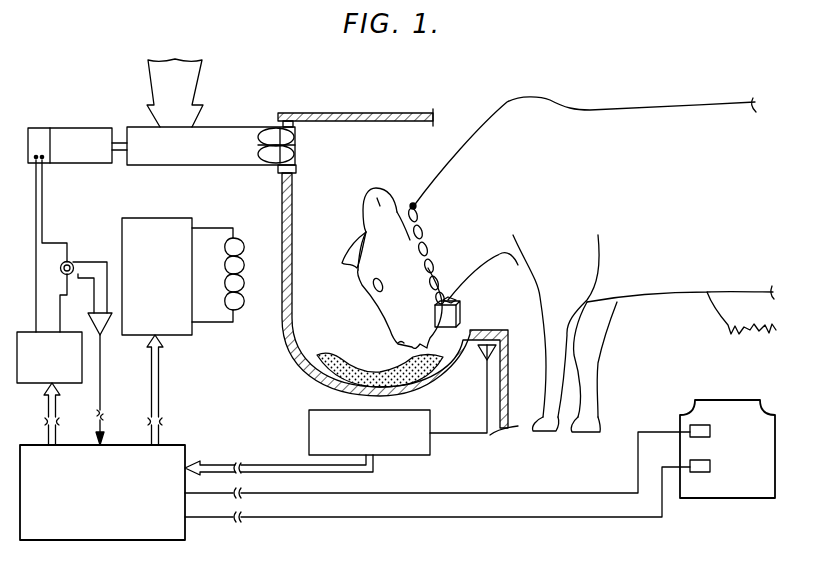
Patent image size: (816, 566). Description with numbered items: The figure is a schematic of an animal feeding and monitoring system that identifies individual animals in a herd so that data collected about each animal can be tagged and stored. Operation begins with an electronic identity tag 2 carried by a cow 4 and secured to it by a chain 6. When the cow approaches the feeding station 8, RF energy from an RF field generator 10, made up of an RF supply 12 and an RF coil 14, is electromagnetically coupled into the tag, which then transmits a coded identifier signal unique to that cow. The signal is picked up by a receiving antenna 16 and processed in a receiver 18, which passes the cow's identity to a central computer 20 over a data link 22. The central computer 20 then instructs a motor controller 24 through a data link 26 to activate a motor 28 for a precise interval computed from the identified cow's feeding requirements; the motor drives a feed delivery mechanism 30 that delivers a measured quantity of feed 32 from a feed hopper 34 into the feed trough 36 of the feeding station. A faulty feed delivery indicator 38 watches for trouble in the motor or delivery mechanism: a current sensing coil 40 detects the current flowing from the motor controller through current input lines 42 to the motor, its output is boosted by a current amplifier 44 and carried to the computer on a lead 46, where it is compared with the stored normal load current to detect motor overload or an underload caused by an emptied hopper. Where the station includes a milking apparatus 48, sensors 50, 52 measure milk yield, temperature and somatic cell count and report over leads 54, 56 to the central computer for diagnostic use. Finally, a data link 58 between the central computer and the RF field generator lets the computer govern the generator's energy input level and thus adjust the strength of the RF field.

The electronic identity tag 2 is at (458, 316).
The cow 4 is at (630, 117).
The chain 6 is at (412, 205).
The feeding station 8 is at (374, 110).
The RF field generator 10 is at (188, 254).
The RF supply 12 is at (136, 218).
The RF coil 14 is at (238, 238).
The receiving antenna 16 is at (481, 355).
The receiver 18 is at (418, 456).
The central computer 20 is at (102, 492).
The data link 22 is at (286, 465).
The motor controller 24 is at (54, 370).
The data link 26 is at (58, 432).
The motor 28 is at (80, 130).
The feed delivery mechanism 30 is at (262, 124).
The feed 32 is at (345, 355).
The feed hopper 34 is at (193, 94).
The feed trough 36 is at (316, 337).
The faulty feed delivery indicator 38 is at (103, 249).
The current sensing coil 40 is at (78, 280).
The current input lines 42 is at (49, 207).
The current amplifier 44 is at (105, 331).
The lead 46 is at (103, 374).
The milking apparatus 48 is at (727, 468).
The sensor 50 is at (707, 472).
The sensor 52 is at (705, 425).
The lead 54 is at (444, 518).
The lead 56 is at (446, 494).
The data link 58 is at (161, 385).